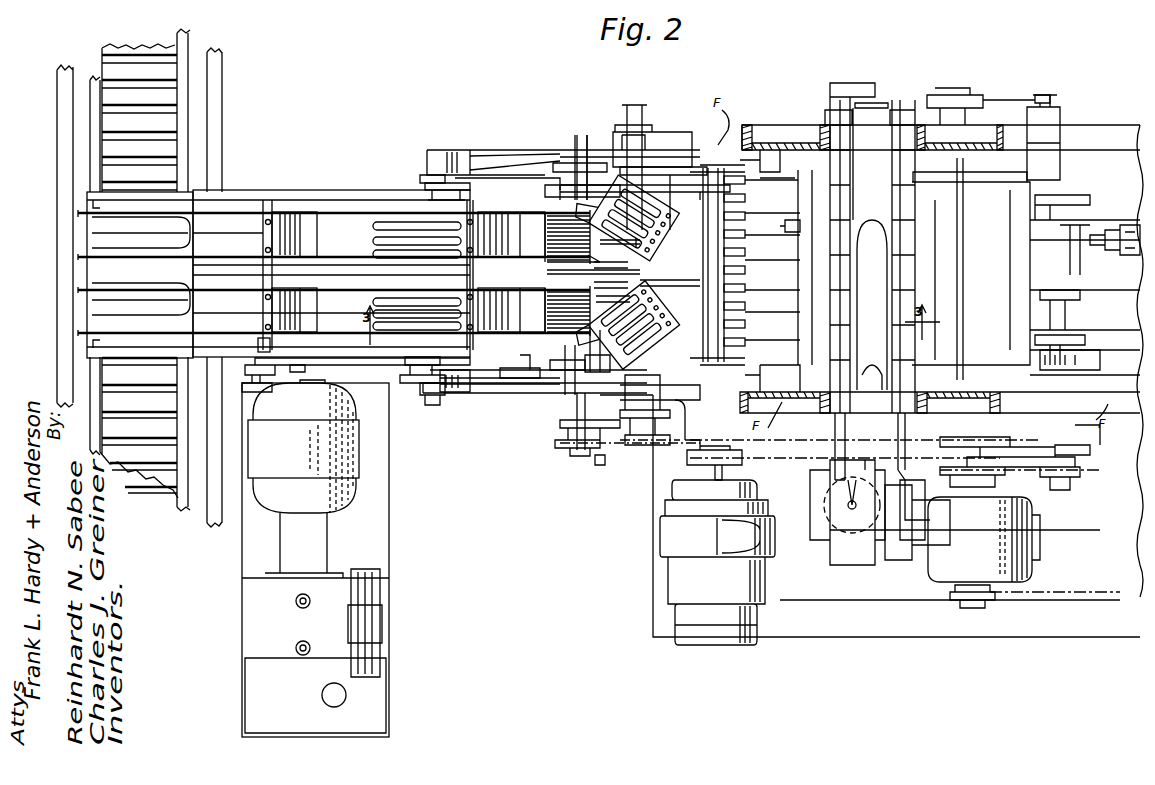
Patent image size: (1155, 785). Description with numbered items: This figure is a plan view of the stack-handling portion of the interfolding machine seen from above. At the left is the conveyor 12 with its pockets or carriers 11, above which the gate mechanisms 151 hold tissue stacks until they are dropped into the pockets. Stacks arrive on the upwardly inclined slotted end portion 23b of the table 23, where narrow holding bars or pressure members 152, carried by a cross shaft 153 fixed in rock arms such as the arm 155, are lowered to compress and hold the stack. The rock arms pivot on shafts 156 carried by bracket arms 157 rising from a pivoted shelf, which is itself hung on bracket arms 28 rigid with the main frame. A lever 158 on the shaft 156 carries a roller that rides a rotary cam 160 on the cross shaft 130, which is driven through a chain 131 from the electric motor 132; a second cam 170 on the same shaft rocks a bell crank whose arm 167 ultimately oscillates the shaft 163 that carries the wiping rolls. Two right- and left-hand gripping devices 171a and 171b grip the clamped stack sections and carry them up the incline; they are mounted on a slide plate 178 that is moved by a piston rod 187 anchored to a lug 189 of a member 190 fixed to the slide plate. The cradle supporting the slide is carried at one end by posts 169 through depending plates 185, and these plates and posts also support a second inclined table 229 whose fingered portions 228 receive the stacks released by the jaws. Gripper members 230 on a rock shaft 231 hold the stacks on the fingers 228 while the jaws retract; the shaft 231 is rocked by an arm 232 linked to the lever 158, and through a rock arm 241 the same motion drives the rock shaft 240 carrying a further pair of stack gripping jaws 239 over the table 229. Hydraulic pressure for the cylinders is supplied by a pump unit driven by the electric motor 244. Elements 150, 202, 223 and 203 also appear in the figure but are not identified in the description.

The pockets or carriers 11 is at (170, 172).
The conveyor 12 is at (152, 49).
The gate mechanisms 151 is at (105, 247).
The stack gripping jaws 239 is at (308, 232).
The rock shaft 240 is at (262, 345).
The rock shaft 231 is at (455, 257).
The gripper members 230 is at (515, 250).
The inclined table 229 is at (512, 290).
The piston rod 187 is at (600, 268).
The fingered portions 228 is at (527, 222).
The gripping device 171a is at (612, 205).
The gripping device 171b is at (610, 330).
The member 190 is at (648, 242).
The slotted end portion of table 23b is at (650, 252).
The lug 189 is at (650, 290).
The slide plate 178 is at (648, 306).
The shaft 163 is at (728, 187).
The pressure members 152 is at (740, 230).
The cross shaft 153 is at (738, 272).
The rock arm 155 is at (703, 370).
The bracket arms 28 is at (500, 134).
The bell crank arm 167 is at (509, 150).
The rotary cam 170 is at (572, 138).
The pivot shafts 156 is at (630, 140).
The bracket arms 157 is at (675, 140).
The cross bar 150 is at (672, 172).
The table 23 is at (787, 177).
The electric motor 132 is at (1040, 545).
The support plate 202 is at (358, 373).
The rock arm 241 is at (272, 372).
The plates 185 is at (430, 198).
The posts 169 is at (430, 185).
The rock arm 232 is at (445, 392).
The rod 223 is at (480, 388).
The rotary cam 160 is at (567, 372).
The lever 158 is at (622, 372).
The cross shaft 130 is at (580, 404).
The chain 131 is at (616, 444).
The control box 203 is at (398, 529).
The electric motor 244 is at (351, 455).